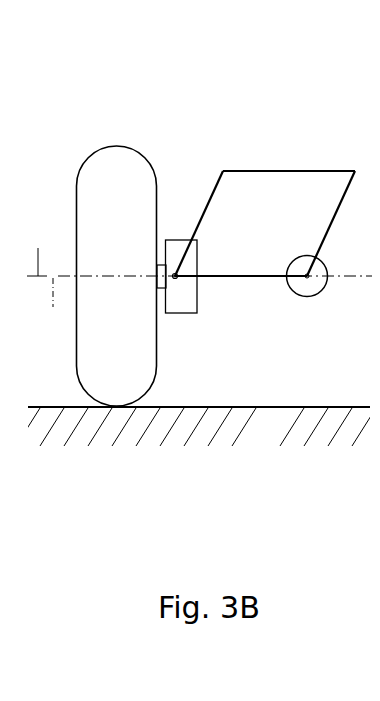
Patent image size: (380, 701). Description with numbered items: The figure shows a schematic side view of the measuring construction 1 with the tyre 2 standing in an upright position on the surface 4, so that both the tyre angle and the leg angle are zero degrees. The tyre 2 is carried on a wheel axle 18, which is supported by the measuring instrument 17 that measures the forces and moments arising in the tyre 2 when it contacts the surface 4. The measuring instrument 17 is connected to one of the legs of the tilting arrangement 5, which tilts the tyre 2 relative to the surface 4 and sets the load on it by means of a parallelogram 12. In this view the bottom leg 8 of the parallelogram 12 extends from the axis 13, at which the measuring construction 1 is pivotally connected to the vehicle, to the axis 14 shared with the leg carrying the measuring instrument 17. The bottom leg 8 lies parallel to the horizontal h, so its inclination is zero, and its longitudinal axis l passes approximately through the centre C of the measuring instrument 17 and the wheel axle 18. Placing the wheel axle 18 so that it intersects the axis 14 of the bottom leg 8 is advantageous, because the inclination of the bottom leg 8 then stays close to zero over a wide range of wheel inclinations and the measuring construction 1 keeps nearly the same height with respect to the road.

The measuring construction 1 is at (80, 119).
The tyre 2 is at (77, 186).
The surface 4 is at (257, 440).
The tilting arrangement 5 is at (256, 150).
The bottom leg 8 is at (250, 276).
The parallelogram 12 is at (307, 171).
The axis 13 is at (307, 296).
The axis 14 is at (178, 281).
The measuring instrument 17 is at (181, 242).
The wheel axle 18 is at (161, 265).
The wheel center point C is at (175, 283).
The horizontal h is at (37, 248).
The longitudinal axis l is at (51, 307).